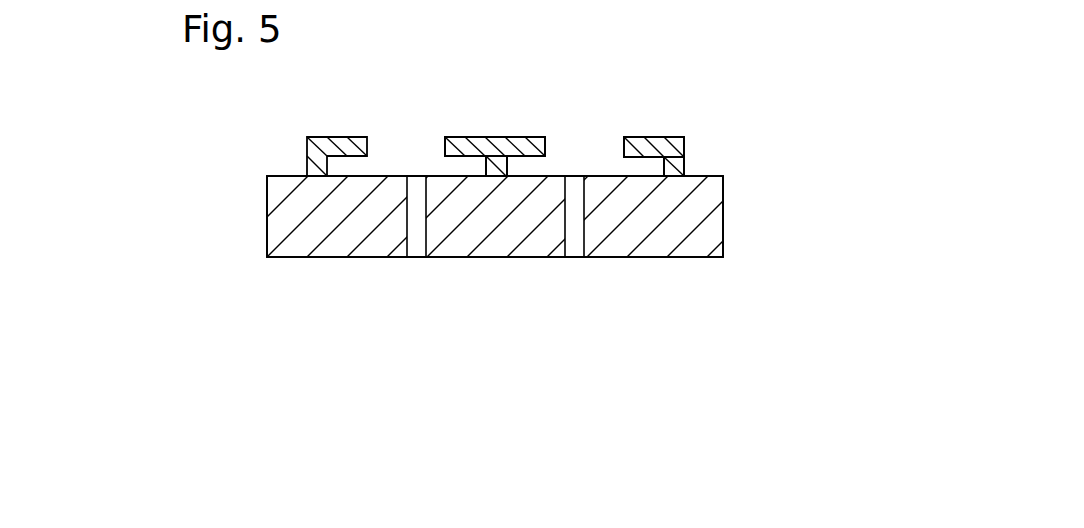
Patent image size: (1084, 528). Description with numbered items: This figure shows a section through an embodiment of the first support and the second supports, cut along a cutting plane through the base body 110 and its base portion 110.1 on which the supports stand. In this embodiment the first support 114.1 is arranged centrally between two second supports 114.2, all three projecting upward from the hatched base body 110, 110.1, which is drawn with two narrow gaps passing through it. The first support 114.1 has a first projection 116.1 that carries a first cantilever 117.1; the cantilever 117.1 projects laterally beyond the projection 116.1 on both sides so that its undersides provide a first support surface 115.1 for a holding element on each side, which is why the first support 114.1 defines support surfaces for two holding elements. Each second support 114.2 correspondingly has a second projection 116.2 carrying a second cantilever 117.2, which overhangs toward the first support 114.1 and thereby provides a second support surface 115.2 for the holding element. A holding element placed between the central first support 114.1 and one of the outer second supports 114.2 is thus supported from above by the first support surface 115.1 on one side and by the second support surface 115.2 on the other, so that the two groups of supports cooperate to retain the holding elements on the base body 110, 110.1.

The carrier body 110 is at (643, 275).
The base plate of carrier 110.1 is at (495, 292).
The first support 114.1 is at (505, 117).
The second support 114.2 is at (345, 137).
The first support surface 115.1 is at (465, 153).
The second support surface 115.2 is at (337, 162).
The first projection 116.1 is at (503, 163).
The second projection 116.2 is at (665, 158).
The first cantilever 117.1 is at (525, 125).
The second cantilever 117.2 is at (643, 150).